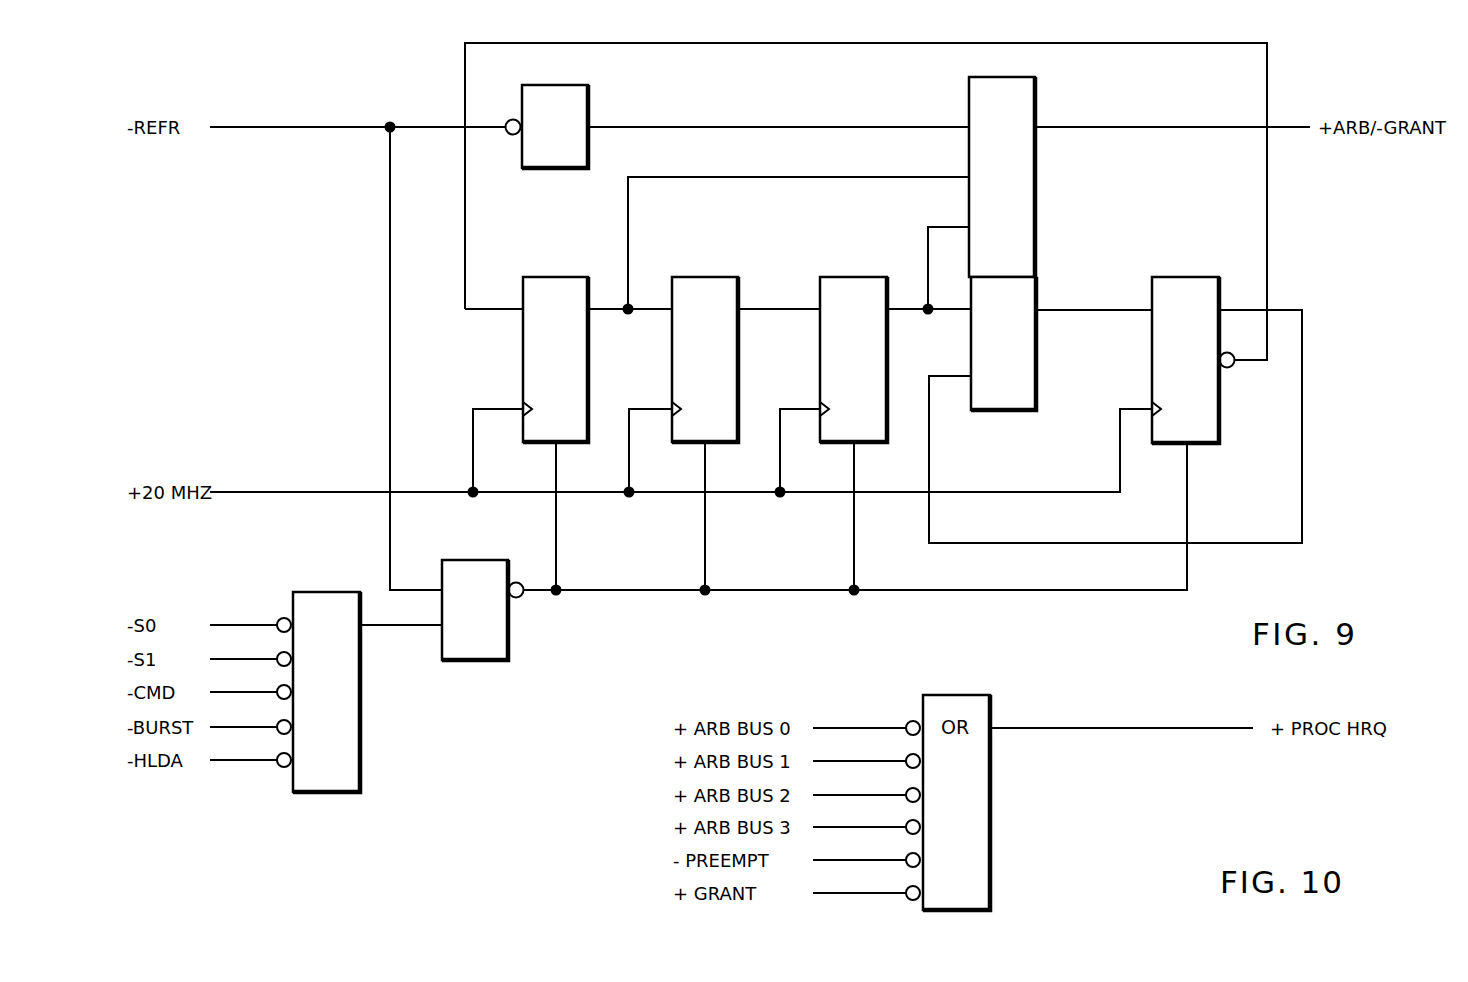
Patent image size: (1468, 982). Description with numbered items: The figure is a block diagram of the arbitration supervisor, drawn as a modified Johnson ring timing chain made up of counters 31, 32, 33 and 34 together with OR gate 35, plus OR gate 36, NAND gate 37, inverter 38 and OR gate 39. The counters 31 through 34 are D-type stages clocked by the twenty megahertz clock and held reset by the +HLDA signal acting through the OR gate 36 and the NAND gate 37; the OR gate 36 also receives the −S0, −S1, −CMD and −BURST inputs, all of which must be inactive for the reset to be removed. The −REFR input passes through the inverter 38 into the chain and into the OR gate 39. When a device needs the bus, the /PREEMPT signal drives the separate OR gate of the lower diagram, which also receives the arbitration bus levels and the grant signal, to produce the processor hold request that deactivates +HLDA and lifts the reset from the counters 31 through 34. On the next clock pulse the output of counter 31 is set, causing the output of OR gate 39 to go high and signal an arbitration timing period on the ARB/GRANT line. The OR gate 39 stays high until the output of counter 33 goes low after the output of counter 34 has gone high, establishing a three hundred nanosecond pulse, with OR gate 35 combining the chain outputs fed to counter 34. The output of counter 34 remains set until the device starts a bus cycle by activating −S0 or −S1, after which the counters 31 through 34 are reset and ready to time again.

The counter 31 is at (563, 277).
The counter 32 is at (711, 277).
The counter 33 is at (860, 277).
The counter 34 is at (1187, 277).
The OR gate 35 is at (1037, 290).
The OR gate 36 is at (323, 792).
The NAND gate 37 is at (467, 660).
The inverter 38 is at (590, 103).
The OR gate 39 is at (1035, 103).